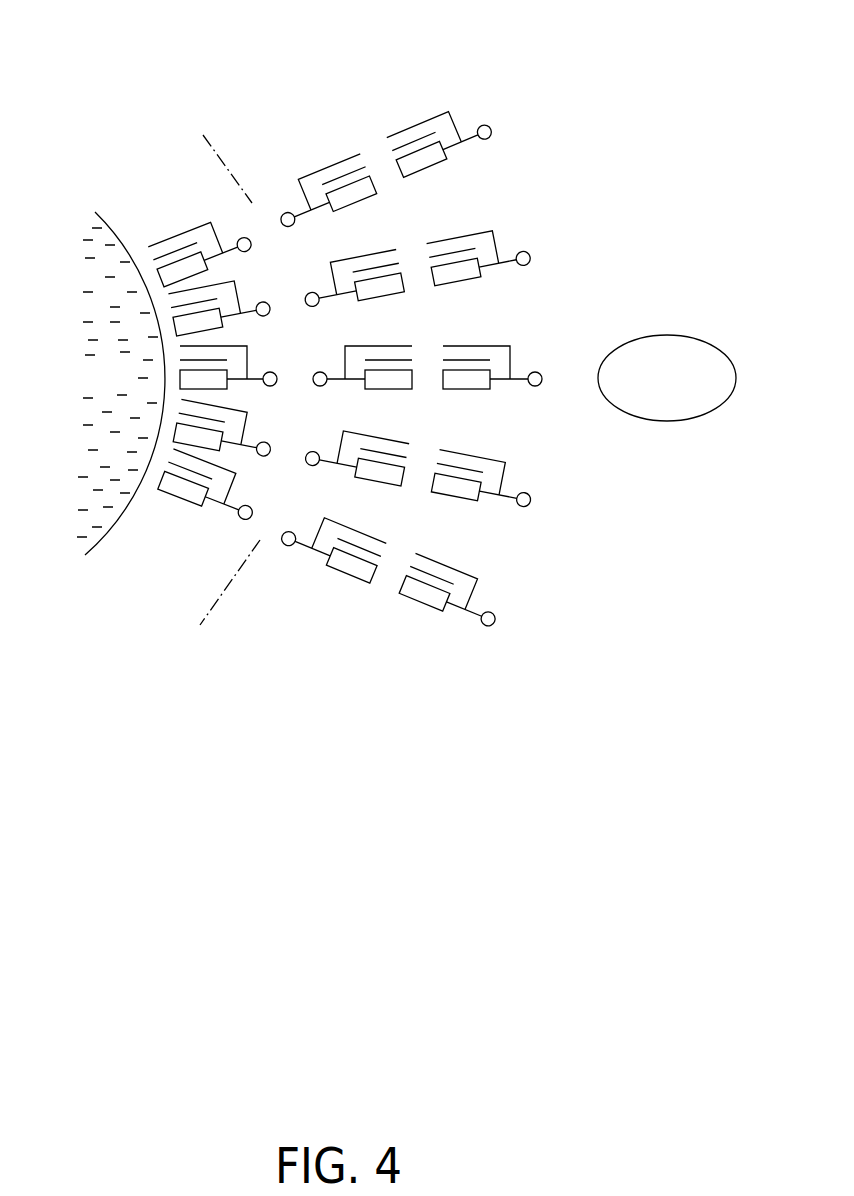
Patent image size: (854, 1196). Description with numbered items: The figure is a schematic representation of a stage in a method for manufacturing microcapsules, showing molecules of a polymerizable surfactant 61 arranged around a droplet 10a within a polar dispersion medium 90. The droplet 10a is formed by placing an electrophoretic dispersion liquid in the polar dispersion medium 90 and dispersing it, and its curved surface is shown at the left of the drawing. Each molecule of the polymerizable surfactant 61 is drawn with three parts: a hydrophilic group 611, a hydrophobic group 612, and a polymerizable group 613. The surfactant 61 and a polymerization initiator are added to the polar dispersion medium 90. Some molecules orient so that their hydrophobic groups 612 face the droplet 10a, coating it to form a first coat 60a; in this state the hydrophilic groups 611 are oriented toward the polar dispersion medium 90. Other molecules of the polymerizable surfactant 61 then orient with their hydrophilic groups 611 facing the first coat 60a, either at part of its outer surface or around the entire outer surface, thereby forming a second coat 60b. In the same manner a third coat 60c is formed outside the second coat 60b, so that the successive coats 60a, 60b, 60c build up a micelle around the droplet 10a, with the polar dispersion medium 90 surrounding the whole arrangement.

The droplet 10a is at (111, 390).
The first coat 60a is at (152, 212).
The second coat 60b is at (313, 148).
The third coat 60c is at (398, 126).
The polymerizable surfactant 61 is at (285, 602).
The hydrophilic group 611 is at (240, 522).
The hydrophobic group 612 is at (177, 497).
The polymerizable group 613 is at (207, 503).
The polar dispersion medium 90 is at (682, 463).